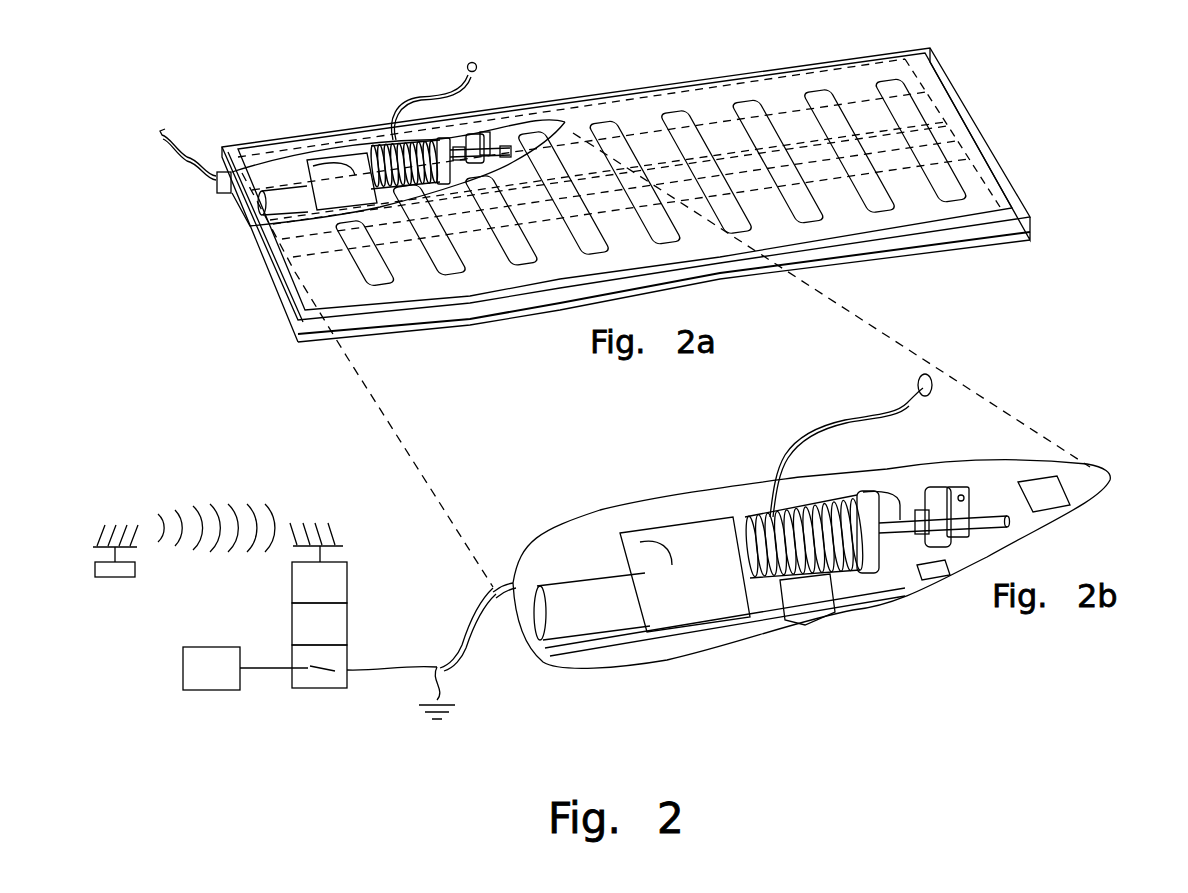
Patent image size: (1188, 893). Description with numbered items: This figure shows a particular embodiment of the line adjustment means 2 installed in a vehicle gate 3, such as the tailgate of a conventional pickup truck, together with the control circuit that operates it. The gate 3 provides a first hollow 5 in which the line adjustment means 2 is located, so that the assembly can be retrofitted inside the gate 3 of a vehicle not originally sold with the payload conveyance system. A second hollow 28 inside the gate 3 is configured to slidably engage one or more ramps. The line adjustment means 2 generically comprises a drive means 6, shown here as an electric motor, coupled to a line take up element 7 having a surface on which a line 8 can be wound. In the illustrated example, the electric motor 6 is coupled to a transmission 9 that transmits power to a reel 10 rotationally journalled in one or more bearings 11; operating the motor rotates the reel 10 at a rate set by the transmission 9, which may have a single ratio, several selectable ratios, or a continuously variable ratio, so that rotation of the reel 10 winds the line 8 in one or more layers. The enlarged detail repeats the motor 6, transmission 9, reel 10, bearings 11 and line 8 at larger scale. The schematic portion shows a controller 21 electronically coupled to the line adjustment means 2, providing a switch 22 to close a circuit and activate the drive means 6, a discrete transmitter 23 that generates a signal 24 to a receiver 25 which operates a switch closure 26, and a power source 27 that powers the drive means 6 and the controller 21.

In FIG. 2B, the line adjustment means 2 is at (899, 646).
In FIG. 2A, the gate 3 is at (990, 172).
In FIG. 2A, the first hollow 5 is at (565, 122).
In FIG. 2A, the drive means 6 is at (280, 193).
In FIG. 2A, the line take up element 7 is at (457, 135).
In FIG. 2A, the line 8 is at (390, 140).
In FIG. 2A, the transmission 9 is at (340, 163).
In FIG. 2A, the reel 10 is at (565, 122).
In FIG. 2A, the bearings 11 is at (483, 133).
In FIG. 2, the controller 21 is at (282, 729).
In FIG. 2, the switch 22 is at (340, 663).
In FIG. 2, the transmitter 23 is at (113, 578).
In FIG. 2, the signal 24 is at (213, 517).
In FIG. 2, the receiver 25 is at (340, 580).
In FIG. 2, the switch closure 26 is at (340, 627).
In FIG. 2, the power source 27 is at (207, 653).
In FIG. 2A, the second hollow 28 is at (988, 237).